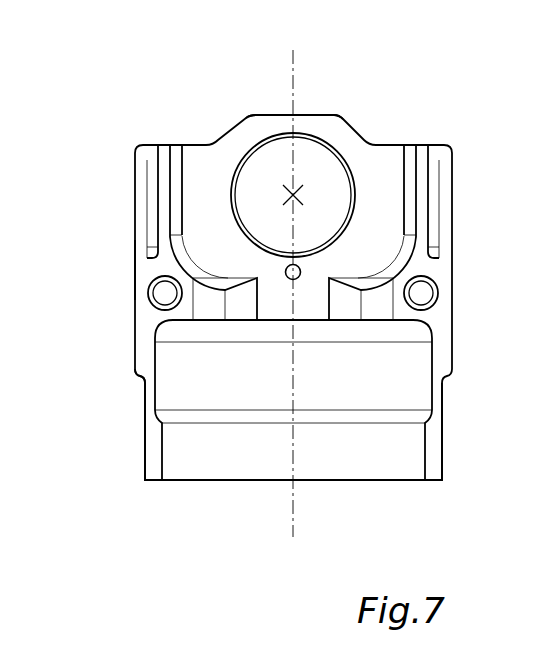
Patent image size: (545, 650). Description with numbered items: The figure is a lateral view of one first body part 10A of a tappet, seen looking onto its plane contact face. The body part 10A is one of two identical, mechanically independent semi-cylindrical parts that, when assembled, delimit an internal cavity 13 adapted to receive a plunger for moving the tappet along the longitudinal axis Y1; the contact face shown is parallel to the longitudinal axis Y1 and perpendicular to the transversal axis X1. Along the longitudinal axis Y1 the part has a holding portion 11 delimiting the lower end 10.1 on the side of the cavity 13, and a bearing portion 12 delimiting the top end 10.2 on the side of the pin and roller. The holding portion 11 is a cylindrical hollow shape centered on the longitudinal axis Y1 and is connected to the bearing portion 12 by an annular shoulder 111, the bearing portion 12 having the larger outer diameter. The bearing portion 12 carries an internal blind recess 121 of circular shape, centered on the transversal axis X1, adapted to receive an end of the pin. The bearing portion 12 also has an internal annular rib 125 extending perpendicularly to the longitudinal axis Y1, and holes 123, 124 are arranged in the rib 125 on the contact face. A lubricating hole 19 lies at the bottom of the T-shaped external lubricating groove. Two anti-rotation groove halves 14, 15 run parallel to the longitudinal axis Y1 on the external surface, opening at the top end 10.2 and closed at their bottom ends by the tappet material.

The first body part 10A is at (104, 114).
The lower end 10.1 is at (152, 480).
The top end 10.2 is at (313, 115).
The holding portion 11 is at (145, 432).
The annular shoulder 111 is at (132, 380).
The bearing portion 12 is at (147, 273).
The recess 121 is at (341, 172).
The hole 123 is at (158, 303).
The hole 124 is at (430, 293).
The rib 125 is at (375, 306).
The cavity 13 is at (293, 400).
The anti-rotation groove 14 is at (147, 152).
The anti-rotation groove 15 is at (445, 175).
The lubricating hole 19 is at (310, 264).
The transversal axis X1 is at (307, 203).
The longitudinal axis Y1 is at (297, 284).